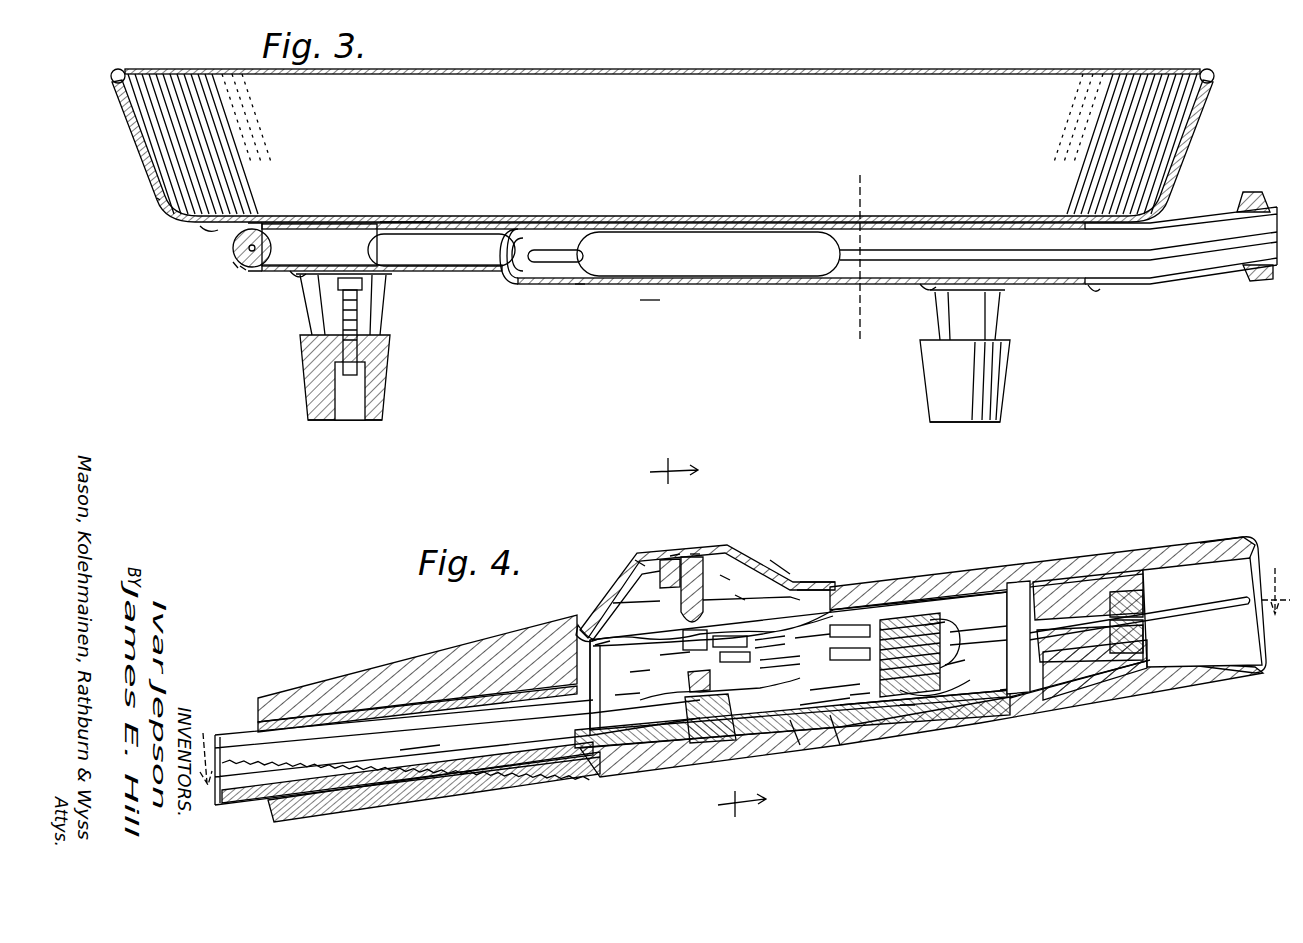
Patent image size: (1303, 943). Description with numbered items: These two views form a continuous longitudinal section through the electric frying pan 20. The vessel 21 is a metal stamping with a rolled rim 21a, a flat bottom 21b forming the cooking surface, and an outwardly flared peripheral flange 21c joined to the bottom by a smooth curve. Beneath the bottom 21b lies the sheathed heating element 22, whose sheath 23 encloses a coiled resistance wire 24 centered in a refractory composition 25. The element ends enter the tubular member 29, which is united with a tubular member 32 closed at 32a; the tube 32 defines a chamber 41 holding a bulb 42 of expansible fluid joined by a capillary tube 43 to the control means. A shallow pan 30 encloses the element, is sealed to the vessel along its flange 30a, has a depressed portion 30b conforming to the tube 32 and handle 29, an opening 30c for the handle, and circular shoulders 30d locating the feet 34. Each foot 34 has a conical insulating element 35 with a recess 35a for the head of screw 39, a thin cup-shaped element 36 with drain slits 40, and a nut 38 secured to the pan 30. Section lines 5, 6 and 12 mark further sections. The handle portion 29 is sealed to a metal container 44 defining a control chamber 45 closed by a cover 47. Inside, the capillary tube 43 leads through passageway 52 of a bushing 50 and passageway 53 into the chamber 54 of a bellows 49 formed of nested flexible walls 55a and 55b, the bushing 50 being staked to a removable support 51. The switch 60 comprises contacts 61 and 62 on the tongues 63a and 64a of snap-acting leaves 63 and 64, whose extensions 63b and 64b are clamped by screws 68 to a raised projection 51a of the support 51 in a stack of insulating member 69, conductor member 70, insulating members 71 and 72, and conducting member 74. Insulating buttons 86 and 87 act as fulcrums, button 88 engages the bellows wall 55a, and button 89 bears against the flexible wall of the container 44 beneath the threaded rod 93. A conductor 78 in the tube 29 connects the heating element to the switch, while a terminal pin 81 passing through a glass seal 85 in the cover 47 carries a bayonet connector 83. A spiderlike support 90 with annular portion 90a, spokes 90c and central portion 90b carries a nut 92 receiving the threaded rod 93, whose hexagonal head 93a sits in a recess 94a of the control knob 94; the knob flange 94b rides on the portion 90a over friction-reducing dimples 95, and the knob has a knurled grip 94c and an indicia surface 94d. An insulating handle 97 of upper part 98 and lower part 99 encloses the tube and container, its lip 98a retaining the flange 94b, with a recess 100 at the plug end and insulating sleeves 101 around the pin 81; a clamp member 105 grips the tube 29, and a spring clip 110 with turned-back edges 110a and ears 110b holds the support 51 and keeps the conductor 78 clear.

In FIG. 4, the section line 5 is at (744, 660).
In FIG. 4, the section line 6 is at (697, 644).
In FIG. 3, the section line 12 is at (870, 192).
In FIG. 3, the electric frying pan 20 is at (704, 312).
In FIG. 3, the vessel 21 is at (846, 59).
In FIG. 3, the rolled rim 21a is at (114, 84).
In FIG. 3, the flat bottom 21b is at (410, 218).
In FIG. 3, the peripheral flange 21c is at (145, 150).
In FIG. 3, the heating element 22 is at (368, 238).
In FIG. 3, the sheath 23 is at (272, 248).
In FIG. 3, the coiled resistance wire 24 is at (235, 262).
In FIG. 3, the refractory composition 25 is at (242, 268).
In FIG. 3, the tubular member 29 is at (1155, 276).
In FIG. 4, the tubular member 29 is at (238, 735).
In FIG. 3, the pan 30 is at (498, 300).
In FIG. 3, the laterally extending flange 30a is at (205, 230).
In FIG. 3, the central depressed portion 30b is at (582, 286).
In FIG. 3, the opening 30c is at (1095, 289).
In FIG. 3, the circular ring or shoulder 30d is at (468, 275).
In FIG. 3, the tubular member 32 is at (622, 236).
In FIG. 3, the closed end 32a is at (441, 250).
In FIG. 3, the feet 34 is at (402, 370).
In FIG. 3, the conically shaped element 35 is at (380, 388).
In FIG. 3, the recess 35a is at (365, 416).
In FIG. 3, the cup-shaped element 36 is at (395, 290).
In FIG. 3, the nut 38 is at (345, 283).
In FIG. 3, the screw 39 is at (345, 355).
In FIG. 3, the slits 40 is at (388, 318).
In FIG. 3, the chamber 41 is at (530, 243).
In FIG. 3, the bulb 42 is at (680, 248).
In FIG. 3, the capillary tube 43 is at (932, 256).
In FIG. 4, the capillary tube 43 is at (515, 750).
In FIG. 4, the metal container 44 is at (878, 605).
In FIG. 4, the control chamber 45 is at (599, 687).
In FIG. 4, the cover 47 is at (1036, 582).
In FIG. 4, the expansible bellows 49 is at (838, 688).
In FIG. 4, the bushing 50 is at (700, 750).
In FIG. 4, the removable support 51 is at (855, 725).
In FIG. 4, the raised projection 51a is at (864, 683).
In FIG. 4, the passageway 52 is at (686, 745).
In FIG. 4, the passageway 53 is at (711, 679).
In FIG. 4, the chamber 54 is at (720, 690).
In FIG. 4, the flexible wall member 55a is at (638, 664).
In FIG. 4, the flexible wall member 55b is at (616, 691).
In FIG. 4, the switch 60 is at (855, 602).
In FIG. 4, the contact 61 is at (850, 637).
In FIG. 4, the contact 62 is at (815, 703).
In FIG. 4, the snap-acting leaf member 63 is at (772, 644).
In FIG. 4, the movable tongue 63a is at (813, 628).
In FIG. 4, the extension 63b is at (942, 616).
In FIG. 4, the snap-acting leaf member 64 is at (785, 649).
In FIG. 4, the movable tongue 64a is at (783, 666).
In FIG. 4, the extension 64b is at (978, 634).
In FIG. 4, the screws 68 is at (905, 615).
In FIG. 4, the insulating member 69 is at (937, 685).
In FIG. 4, the conductor member 70 is at (1005, 637).
In FIG. 4, the insulating member 71 is at (961, 659).
In FIG. 4, the insulating member 72 is at (978, 619).
In FIG. 4, the conducting member 74 is at (938, 620).
In FIG. 4, the conductor 78 is at (425, 750).
In FIG. 4, the contact terminal 81 is at (1178, 620).
In FIG. 4, the female type bayonet connector 83 is at (1006, 688).
In FIG. 4, the glass sealing means 85 is at (1095, 670).
In FIG. 4, the insulating button 86 is at (730, 635).
In FIG. 4, the insulating button 87 is at (725, 654).
In FIG. 4, the insulating button 88 is at (675, 659).
In FIG. 4, the insulating button 89 is at (683, 634).
In FIG. 4, the annular spiderlike support 90 is at (628, 594).
In FIG. 4, the annular portion 90a is at (611, 637).
In FIG. 4, the central portion 90b is at (734, 572).
In FIG. 4, the spokelike members 90c is at (748, 590).
In FIG. 4, the nut 92 is at (705, 557).
In FIG. 4, the threaded rod 93 is at (672, 592).
In FIG. 4, the hexagonal head portion 93a is at (700, 553).
In FIG. 4, the control knob 94 is at (707, 591).
In FIG. 4, the recess 94a is at (676, 558).
In FIG. 4, the flange portion 94b is at (820, 573).
In FIG. 4, the finger grip portion 94c is at (632, 568).
In FIG. 4, the angular surface 94d is at (770, 575).
In FIG. 4, the dimples or protrusions 95 is at (584, 628).
In FIG. 3, the insulating handle portion 97 is at (1254, 186).
In FIG. 4, the insulating handle portion 97 is at (381, 656).
In FIG. 4, the upper part 98 is at (1002, 578).
In FIG. 4, the overhanging annular lip 98a is at (808, 575).
In FIG. 4, the lower part 99 is at (1052, 708).
In FIG. 4, the recess 100 is at (1210, 560).
In FIG. 4, the insulating sleeves 101 is at (1150, 606).
In FIG. 4, the clamp member 105 is at (410, 792).
In FIG. 4, the spring clip 110 is at (740, 748).
In FIG. 4, the turned back edges 110a is at (843, 750).
In FIG. 4, the projecting ears 110b is at (796, 751).